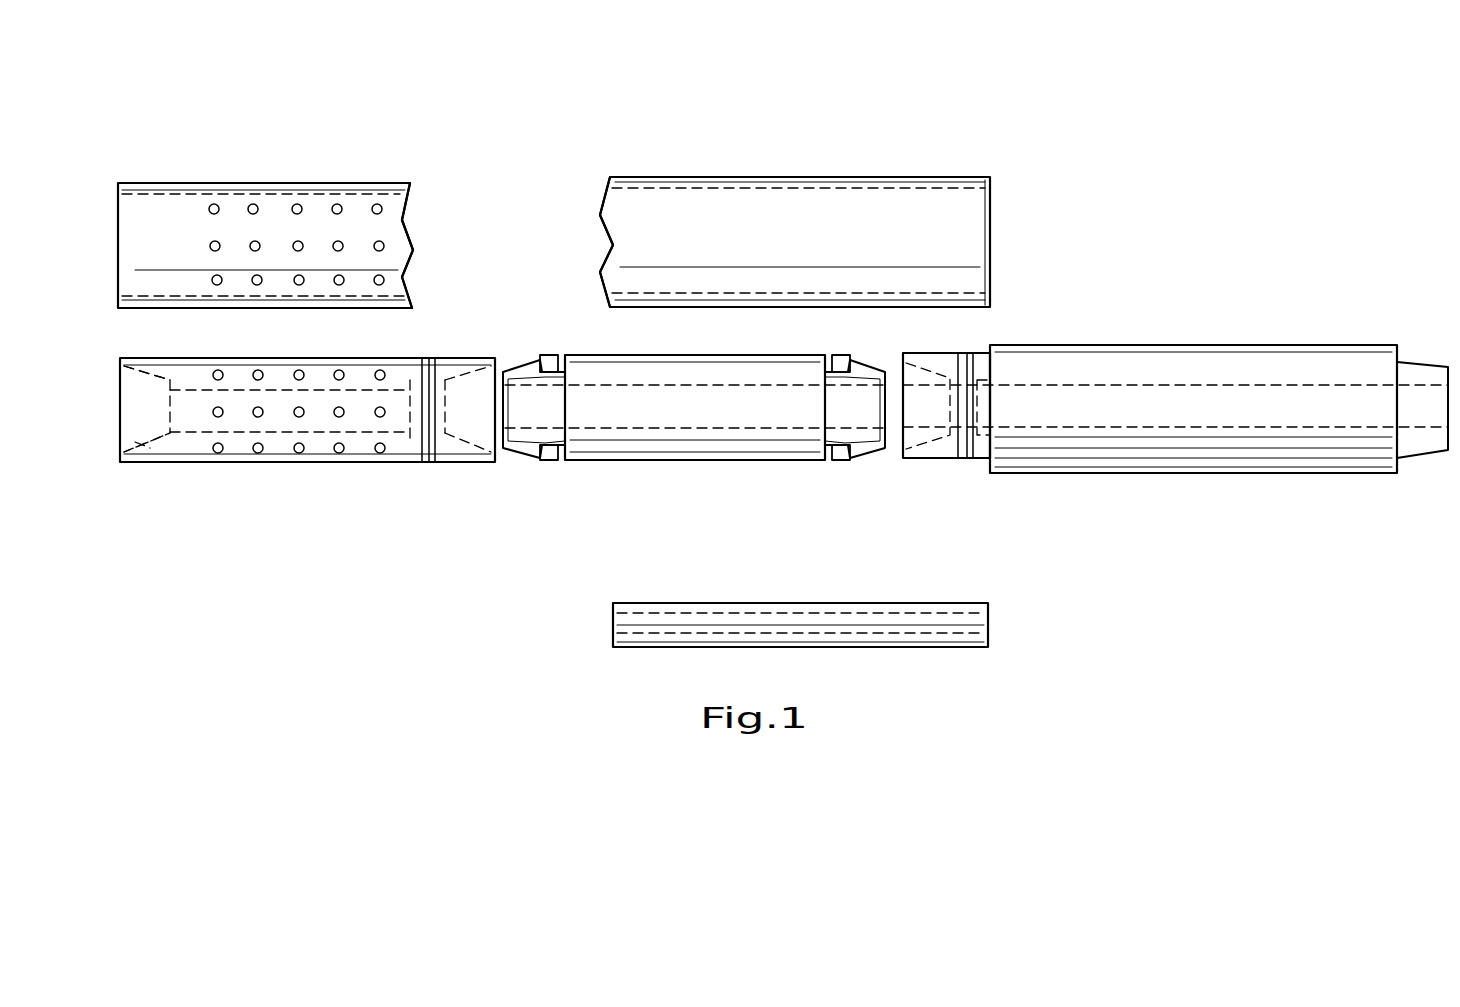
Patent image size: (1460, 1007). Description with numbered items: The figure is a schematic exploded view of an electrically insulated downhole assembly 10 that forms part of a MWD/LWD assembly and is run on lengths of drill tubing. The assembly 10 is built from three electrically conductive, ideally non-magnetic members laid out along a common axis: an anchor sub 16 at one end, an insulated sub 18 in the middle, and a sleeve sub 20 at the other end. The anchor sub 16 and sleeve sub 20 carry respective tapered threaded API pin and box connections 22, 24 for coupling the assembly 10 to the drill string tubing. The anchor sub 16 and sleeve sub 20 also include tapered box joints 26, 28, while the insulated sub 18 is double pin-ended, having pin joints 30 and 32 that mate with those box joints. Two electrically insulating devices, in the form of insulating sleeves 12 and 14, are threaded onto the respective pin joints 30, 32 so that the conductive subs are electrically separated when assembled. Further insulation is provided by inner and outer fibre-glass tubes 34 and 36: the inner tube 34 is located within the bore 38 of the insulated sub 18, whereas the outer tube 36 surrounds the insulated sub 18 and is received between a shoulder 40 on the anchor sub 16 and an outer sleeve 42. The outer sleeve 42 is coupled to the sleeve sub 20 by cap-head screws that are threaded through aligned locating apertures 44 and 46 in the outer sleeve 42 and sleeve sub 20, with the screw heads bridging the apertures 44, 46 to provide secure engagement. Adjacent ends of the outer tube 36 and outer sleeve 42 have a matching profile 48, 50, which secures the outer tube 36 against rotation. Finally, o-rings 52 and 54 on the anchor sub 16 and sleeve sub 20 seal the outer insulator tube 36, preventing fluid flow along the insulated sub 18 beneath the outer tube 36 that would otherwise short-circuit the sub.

The electrically insulated downhole assembly 10 is at (1148, 184).
The insulating sleeve 12 is at (694, 434).
The insulating sleeve 14 is at (527, 465).
The anchor sub 16 is at (1253, 358).
The insulated sub 18 is at (634, 442).
The sleeve sub 20 is at (187, 462).
The tapered threaded API pin connection 22 is at (1422, 372).
The tapered threaded API box connection 24 is at (135, 472).
The tapered box joint 26 is at (957, 344).
The tapered box joint 28 is at (460, 372).
The pin joint 30 is at (857, 472).
The pin joint 32 is at (552, 372).
The inner fibre-glass tube 34 is at (977, 647).
The outer fibre-glass tube 36 is at (985, 200).
The bore 38 is at (743, 412).
The shoulder 40 is at (979, 426).
The outer sleeve 42 is at (413, 190).
The locating apertures 44 is at (252, 205).
The locating apertures 46 is at (263, 460).
The matching profile 48 is at (600, 253).
The matching profile 50 is at (413, 253).
The o-ring 52 is at (962, 465).
The o-ring 54 is at (423, 464).